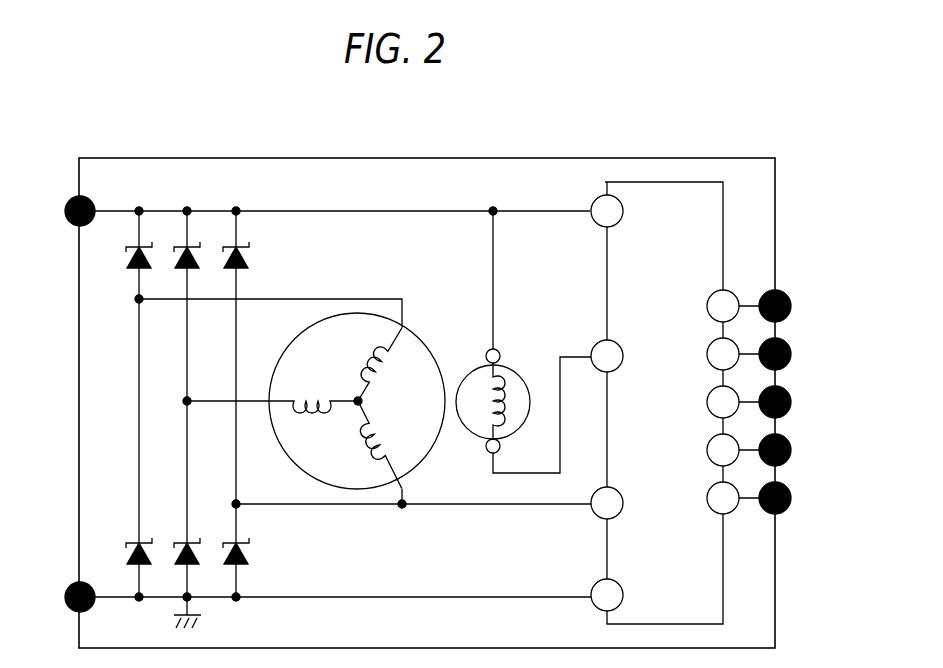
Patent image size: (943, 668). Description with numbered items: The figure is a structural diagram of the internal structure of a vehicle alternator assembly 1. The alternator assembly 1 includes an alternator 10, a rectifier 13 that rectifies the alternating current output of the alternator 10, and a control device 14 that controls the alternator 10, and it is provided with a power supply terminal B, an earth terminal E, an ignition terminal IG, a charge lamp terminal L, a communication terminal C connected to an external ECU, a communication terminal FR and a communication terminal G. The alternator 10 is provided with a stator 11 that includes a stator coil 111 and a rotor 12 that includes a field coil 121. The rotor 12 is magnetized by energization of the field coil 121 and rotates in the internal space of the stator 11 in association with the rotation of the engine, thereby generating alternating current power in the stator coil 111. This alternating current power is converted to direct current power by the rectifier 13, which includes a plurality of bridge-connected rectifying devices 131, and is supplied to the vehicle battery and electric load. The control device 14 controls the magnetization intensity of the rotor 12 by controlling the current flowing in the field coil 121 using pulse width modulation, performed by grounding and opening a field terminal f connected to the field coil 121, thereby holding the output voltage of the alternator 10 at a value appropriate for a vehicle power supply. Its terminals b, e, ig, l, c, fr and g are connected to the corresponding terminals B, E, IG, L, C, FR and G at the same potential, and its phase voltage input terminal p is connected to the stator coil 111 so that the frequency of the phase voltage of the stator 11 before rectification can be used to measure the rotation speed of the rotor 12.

The alternator assembly 1 is at (429, 158).
The alternator 10 is at (452, 425).
The stator 11 is at (428, 344).
The stator coil 111 is at (372, 438).
The rotor 12 is at (511, 362).
The field coil 121 is at (500, 427).
The rectifier 13 is at (155, 352).
The rectifying devices 131 is at (247, 258).
The control device 14 is at (662, 182).